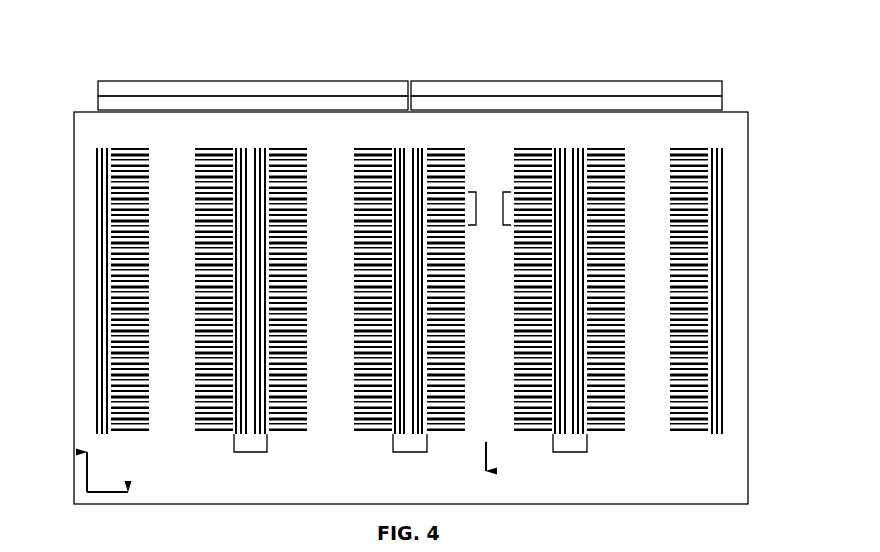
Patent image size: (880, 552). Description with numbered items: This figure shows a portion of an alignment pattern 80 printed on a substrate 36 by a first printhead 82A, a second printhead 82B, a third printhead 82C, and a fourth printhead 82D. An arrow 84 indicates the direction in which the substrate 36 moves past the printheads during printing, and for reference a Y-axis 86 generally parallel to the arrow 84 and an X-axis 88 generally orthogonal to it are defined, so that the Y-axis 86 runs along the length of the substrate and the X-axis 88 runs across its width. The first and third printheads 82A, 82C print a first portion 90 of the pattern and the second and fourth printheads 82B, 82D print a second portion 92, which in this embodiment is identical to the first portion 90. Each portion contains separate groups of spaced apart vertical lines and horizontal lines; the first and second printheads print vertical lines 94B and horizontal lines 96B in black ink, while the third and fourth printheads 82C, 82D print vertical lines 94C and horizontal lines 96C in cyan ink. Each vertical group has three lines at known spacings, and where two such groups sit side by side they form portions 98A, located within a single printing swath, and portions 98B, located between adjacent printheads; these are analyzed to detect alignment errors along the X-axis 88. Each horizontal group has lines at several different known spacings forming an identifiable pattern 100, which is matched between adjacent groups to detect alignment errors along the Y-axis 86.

The substrate 36 is at (650, 490).
The alignment pattern 80 is at (167, 484).
The first printhead 82A is at (108, 87).
The second printhead 82B is at (481, 90).
The third printhead 82C is at (103, 106).
The fourth printhead 82D is at (718, 106).
The arrow 84 is at (485, 455).
The Y-axis 86 is at (87, 480).
The X-axis 88 is at (100, 494).
The first portion 90 is at (251, 130).
The second portion 92 is at (568, 125).
The vertical lines 94B is at (95, 135).
The vertical lines 94C is at (260, 139).
The horizontal lines 96B is at (130, 139).
The horizontal lines 96C is at (289, 139).
The portions 98A is at (251, 453).
The portions 98B is at (410, 453).
The identifiable pattern 100 is at (477, 208).